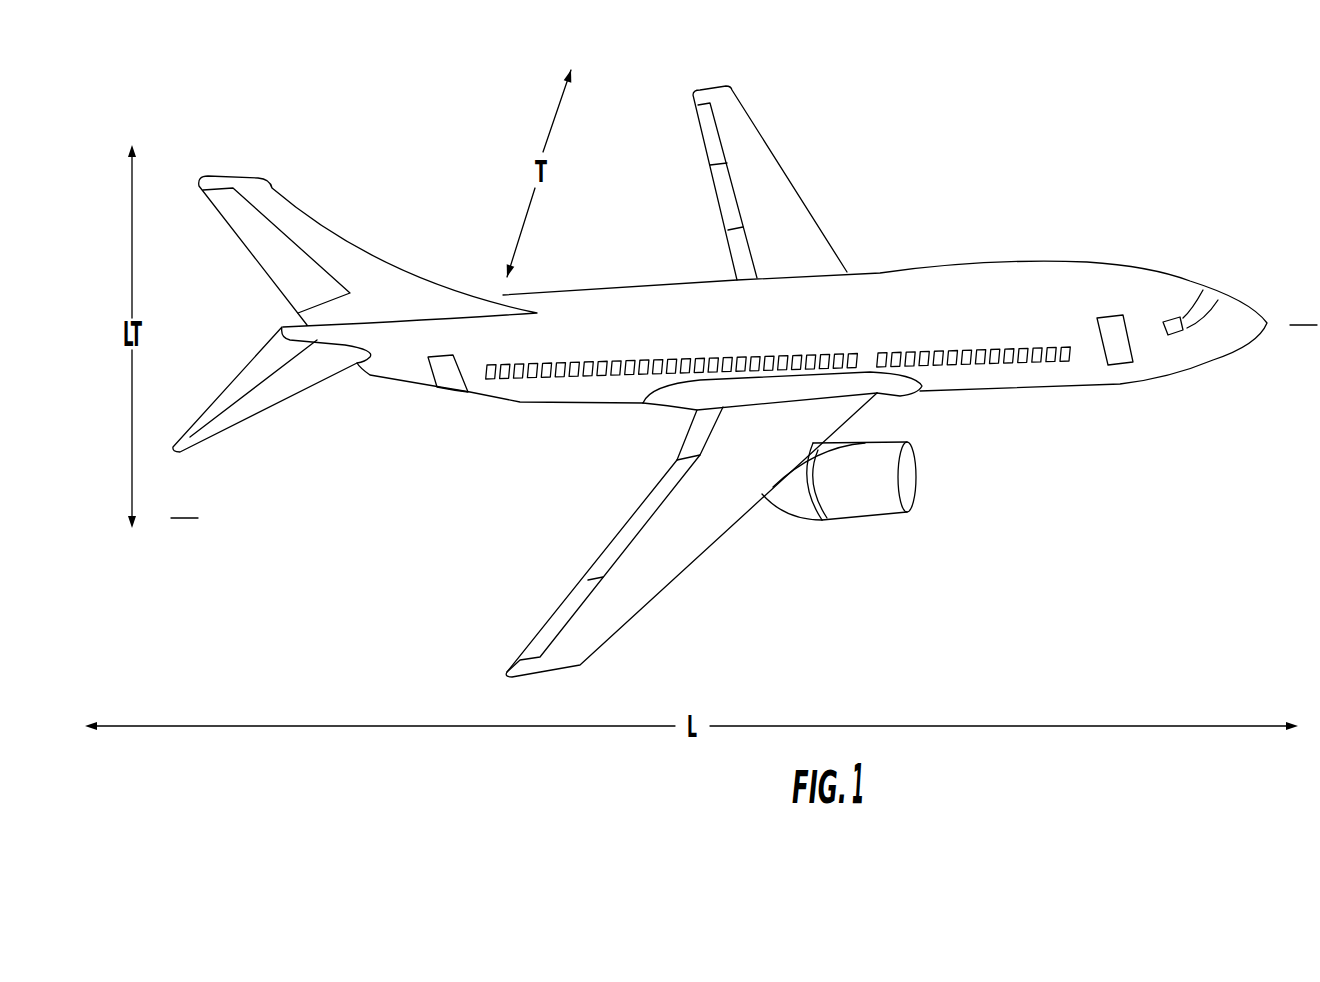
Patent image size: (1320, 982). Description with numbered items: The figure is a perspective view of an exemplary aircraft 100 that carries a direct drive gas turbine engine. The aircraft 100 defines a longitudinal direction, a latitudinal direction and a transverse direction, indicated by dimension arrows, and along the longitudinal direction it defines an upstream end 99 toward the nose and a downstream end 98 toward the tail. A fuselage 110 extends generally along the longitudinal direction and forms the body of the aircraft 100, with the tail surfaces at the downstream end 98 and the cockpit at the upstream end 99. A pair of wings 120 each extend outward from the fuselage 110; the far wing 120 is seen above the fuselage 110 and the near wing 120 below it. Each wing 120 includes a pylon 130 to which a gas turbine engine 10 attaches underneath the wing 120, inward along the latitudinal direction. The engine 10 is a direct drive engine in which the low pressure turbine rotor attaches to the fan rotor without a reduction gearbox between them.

The aircraft 100 is at (1090, 188).
The fuselage 110 is at (910, 293).
The wing 120 is at (770, 177).
The pylon 130 is at (802, 460).
The gas turbine engine 10 is at (880, 507).
The downstream end 98 is at (184, 502).
The upstream end 99 is at (1303, 309).